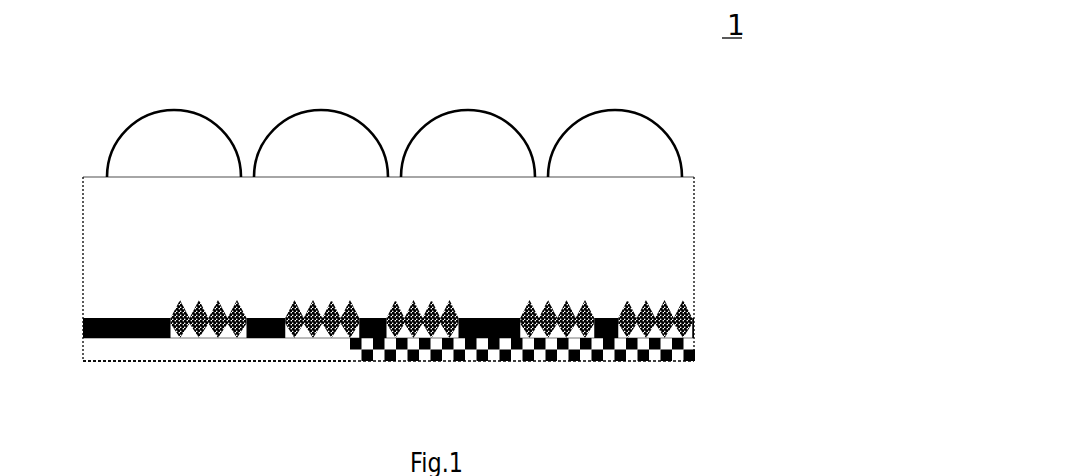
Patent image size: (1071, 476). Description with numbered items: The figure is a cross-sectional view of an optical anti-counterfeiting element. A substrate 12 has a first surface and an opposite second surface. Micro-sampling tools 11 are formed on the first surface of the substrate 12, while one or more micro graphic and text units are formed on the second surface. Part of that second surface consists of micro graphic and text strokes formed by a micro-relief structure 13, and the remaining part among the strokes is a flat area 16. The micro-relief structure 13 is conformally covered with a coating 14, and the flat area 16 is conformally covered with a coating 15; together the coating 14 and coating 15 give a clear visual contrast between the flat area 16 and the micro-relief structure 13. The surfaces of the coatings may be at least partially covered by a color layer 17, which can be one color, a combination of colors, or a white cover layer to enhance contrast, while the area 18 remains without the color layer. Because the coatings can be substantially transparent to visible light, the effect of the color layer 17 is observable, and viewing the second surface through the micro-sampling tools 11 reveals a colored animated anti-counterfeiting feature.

The micro-sampling tools 11 is at (663, 153).
The substrate 12 is at (660, 242).
The micro-relief structure 13 is at (685, 302).
The coating 14 is at (692, 317).
The coating 15 is at (602, 318).
The flat area 16 is at (614, 317).
The color layer 17 is at (612, 357).
The area without the color layer 18 is at (198, 353).